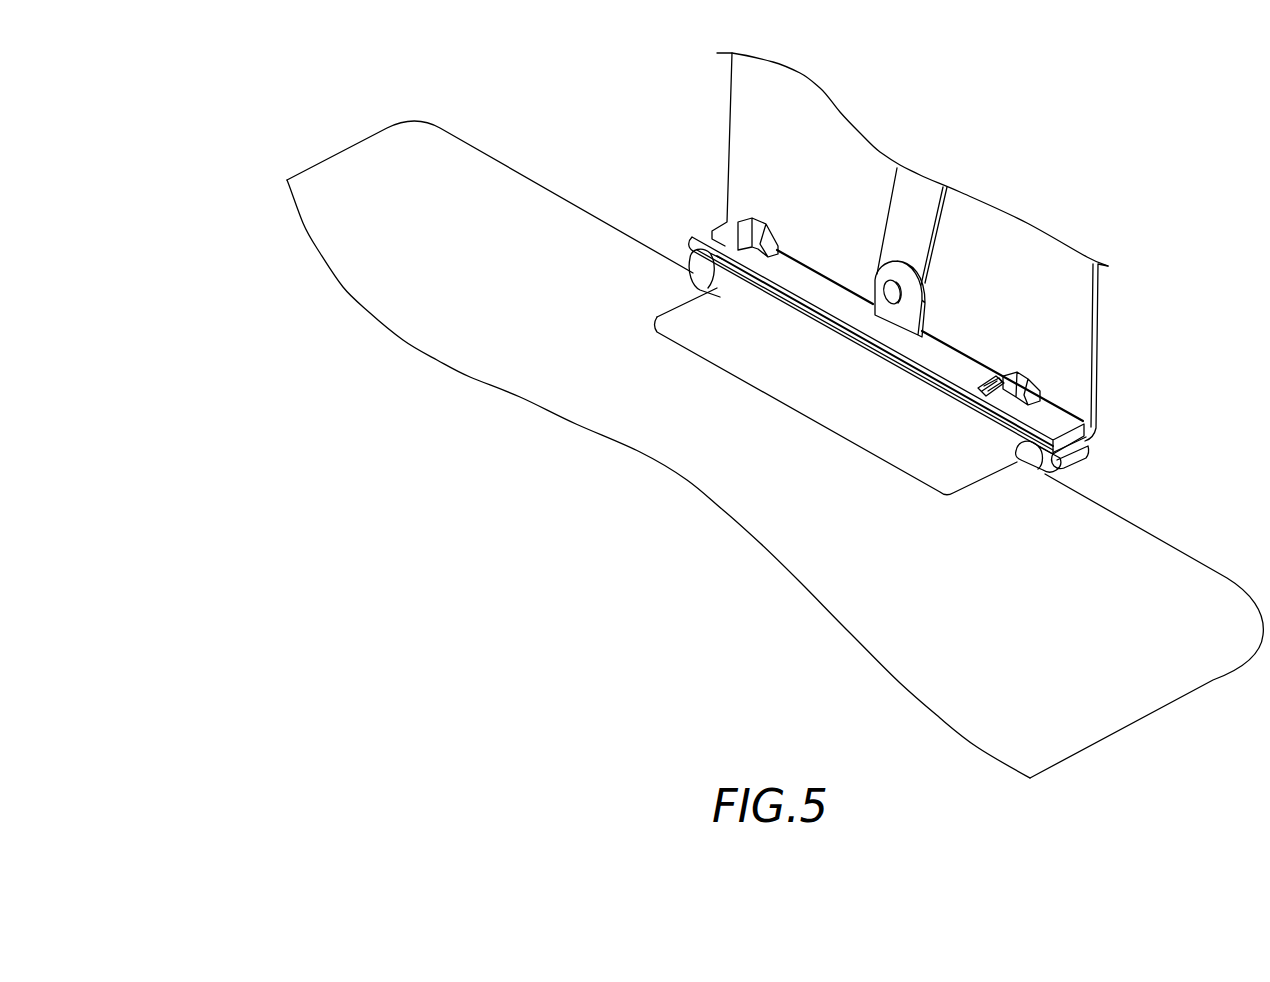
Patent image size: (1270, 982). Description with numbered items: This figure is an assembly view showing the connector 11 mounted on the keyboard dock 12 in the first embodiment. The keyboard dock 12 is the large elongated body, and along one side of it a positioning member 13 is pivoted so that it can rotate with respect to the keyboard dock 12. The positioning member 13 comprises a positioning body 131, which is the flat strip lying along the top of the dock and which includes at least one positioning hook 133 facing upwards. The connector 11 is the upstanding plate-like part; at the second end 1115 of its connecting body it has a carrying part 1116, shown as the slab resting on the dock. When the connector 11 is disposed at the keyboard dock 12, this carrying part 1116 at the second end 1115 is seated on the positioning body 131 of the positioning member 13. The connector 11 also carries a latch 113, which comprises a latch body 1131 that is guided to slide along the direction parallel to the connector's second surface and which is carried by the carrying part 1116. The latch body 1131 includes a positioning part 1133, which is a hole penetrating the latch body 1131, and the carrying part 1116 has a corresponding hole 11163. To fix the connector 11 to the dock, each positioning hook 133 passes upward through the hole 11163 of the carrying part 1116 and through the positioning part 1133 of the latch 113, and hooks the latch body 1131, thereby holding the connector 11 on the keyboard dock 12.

The connector 11 is at (899, 253).
The keyboard dock 12 is at (340, 151).
The positioning member 13 is at (946, 372).
The latch 113 is at (932, 308).
The positioning body 131 is at (1070, 450).
The positioning hook 133 is at (742, 213).
The second end 1115 is at (715, 199).
The carrying part 1116 is at (720, 237).
The latch body 1131 is at (911, 313).
The positioning part 1133 is at (988, 387).
The hole 11163 is at (1000, 388).